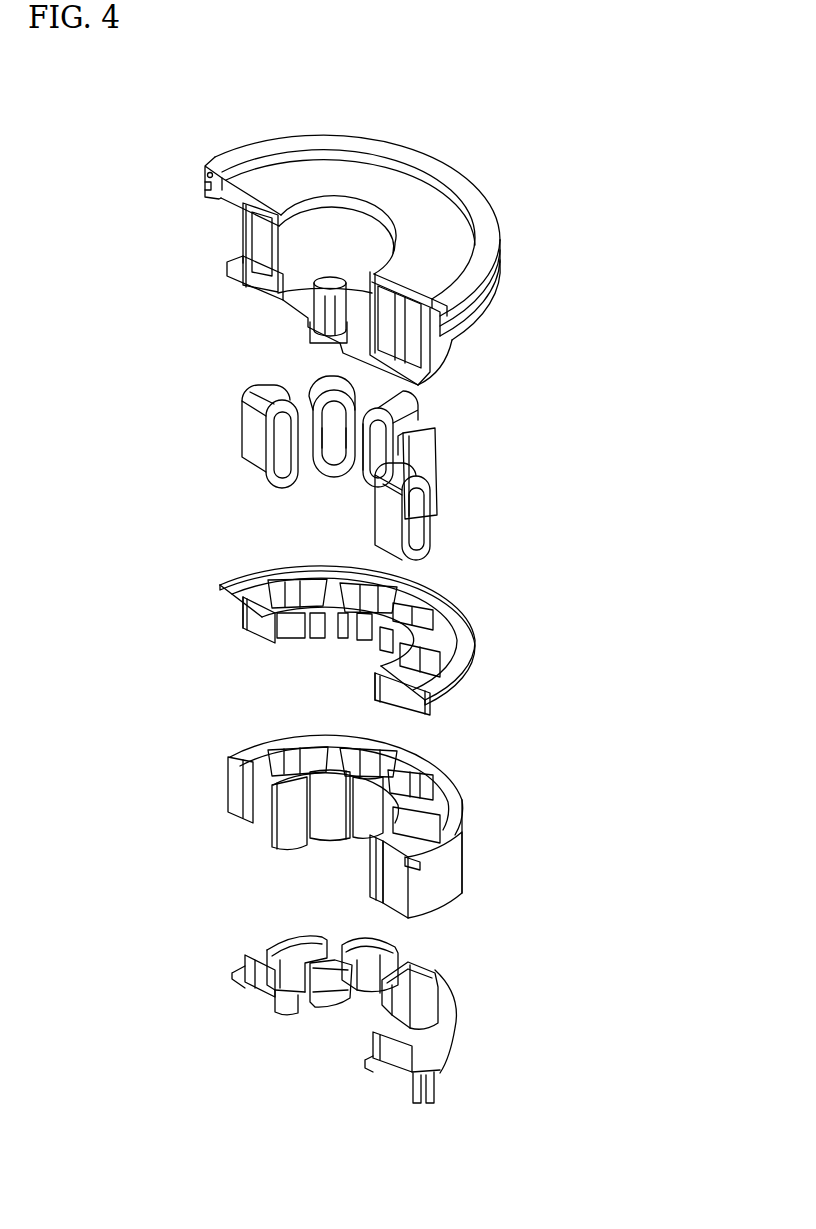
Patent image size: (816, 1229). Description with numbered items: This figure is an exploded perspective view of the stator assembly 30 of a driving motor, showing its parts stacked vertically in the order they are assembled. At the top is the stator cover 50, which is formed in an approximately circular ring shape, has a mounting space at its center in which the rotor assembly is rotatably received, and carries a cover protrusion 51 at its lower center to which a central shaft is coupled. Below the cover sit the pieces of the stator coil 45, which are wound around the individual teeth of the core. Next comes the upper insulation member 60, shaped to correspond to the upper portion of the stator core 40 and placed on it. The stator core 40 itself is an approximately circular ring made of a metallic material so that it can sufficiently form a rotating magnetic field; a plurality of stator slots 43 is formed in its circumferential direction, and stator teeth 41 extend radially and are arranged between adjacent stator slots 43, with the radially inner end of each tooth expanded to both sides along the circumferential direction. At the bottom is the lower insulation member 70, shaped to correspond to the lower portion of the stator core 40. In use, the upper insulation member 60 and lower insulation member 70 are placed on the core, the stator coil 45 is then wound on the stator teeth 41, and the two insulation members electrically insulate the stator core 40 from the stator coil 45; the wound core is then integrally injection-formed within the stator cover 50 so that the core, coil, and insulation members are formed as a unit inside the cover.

The stator assembly 30 is at (607, 238).
The stator cover 50 is at (338, 138).
The cover protrusion 51 is at (328, 290).
The stator coil 45 is at (447, 485).
The upper insulation member 60 is at (210, 603).
The stator core 40 is at (218, 783).
The stator teeth 41 is at (390, 763).
The stator slots 43 is at (418, 828).
The lower insulation member 70 is at (222, 971).